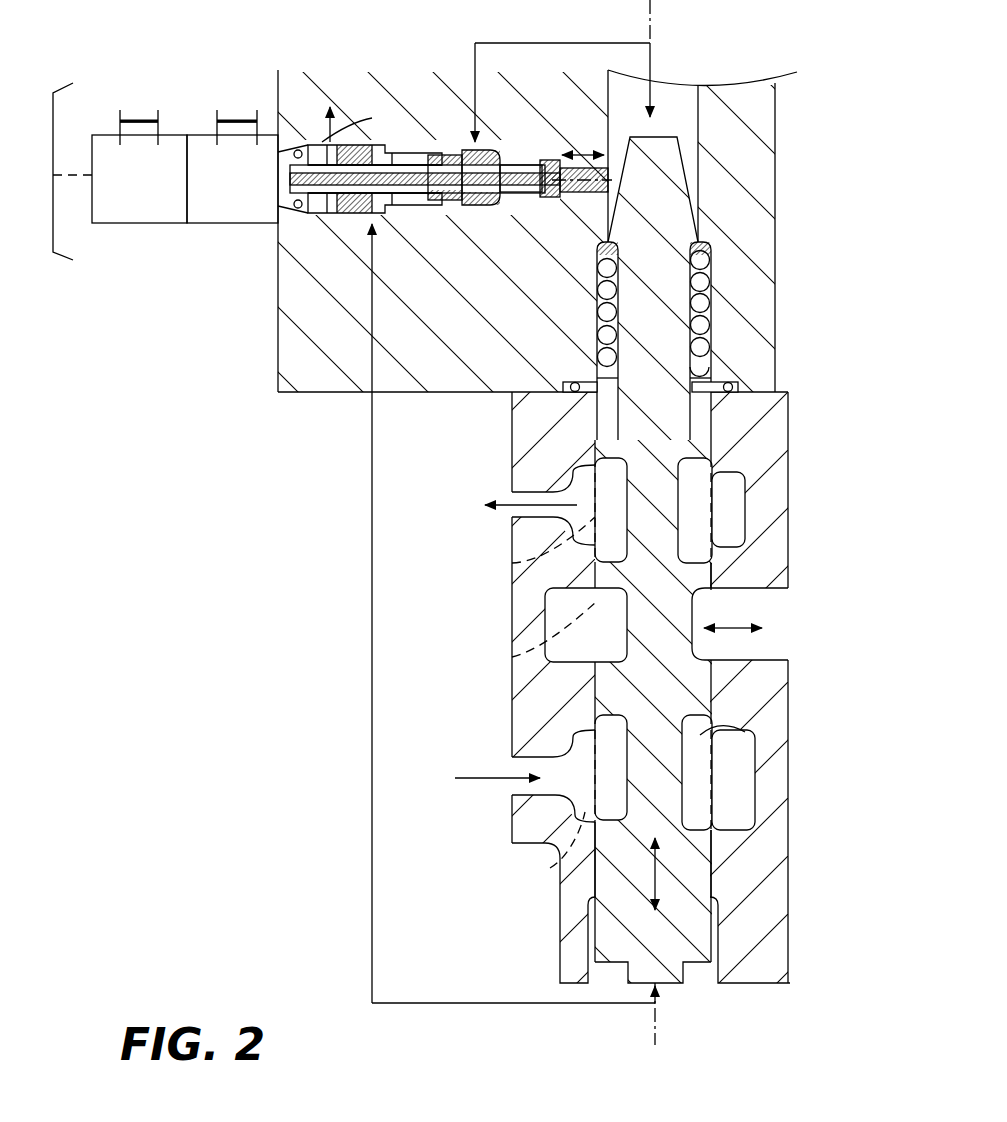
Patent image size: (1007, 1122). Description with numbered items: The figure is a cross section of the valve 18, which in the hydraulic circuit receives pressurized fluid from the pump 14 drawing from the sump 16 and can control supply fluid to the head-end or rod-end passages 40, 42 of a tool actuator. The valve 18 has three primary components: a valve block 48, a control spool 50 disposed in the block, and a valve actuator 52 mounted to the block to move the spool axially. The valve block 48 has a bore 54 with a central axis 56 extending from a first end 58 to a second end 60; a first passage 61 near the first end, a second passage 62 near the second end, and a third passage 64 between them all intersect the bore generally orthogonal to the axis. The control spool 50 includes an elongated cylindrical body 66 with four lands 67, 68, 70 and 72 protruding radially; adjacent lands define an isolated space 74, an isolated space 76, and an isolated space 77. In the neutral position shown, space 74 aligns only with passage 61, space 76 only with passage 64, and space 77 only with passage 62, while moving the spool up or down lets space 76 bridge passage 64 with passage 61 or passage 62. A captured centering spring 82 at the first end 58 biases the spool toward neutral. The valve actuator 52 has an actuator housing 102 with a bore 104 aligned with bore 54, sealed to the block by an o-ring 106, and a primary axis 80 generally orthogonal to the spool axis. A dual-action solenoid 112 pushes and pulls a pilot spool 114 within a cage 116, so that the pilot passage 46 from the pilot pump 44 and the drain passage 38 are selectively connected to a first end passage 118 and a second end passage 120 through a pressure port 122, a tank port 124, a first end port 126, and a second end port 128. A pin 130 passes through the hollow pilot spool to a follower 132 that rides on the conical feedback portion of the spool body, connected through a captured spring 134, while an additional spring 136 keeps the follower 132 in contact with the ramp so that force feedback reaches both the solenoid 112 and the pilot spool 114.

The pump 14 is at (479, 771).
The sump 16 is at (439, 310).
The valve 18 is at (208, 700).
The drain passage 38 is at (333, 140).
The head-end passage 40 is at (817, 618).
The rod-end passage 42 is at (804, 643).
The pilot pump 44 is at (451, 92).
The pilot passage 46 is at (420, 142).
The valve block 48 is at (768, 439).
The control spool 50 is at (667, 562).
The valve actuator 52 is at (53, 178).
The bore 54 is at (700, 727).
The central axis 56 is at (655, 1020).
The first end 58 is at (777, 230).
The second end 60 is at (792, 973).
The first passage 61 is at (593, 497).
The second passage 62 is at (590, 787).
The third passage 64 is at (750, 624).
The body 66 is at (684, 975).
The land 67 is at (702, 455).
The land 68 is at (688, 580).
The land 70 is at (680, 692).
The land 72 is at (690, 893).
The isolated space 74 is at (512, 563).
The isolated space 76 is at (512, 657).
The isolated space 77 is at (550, 868).
The primary axis 80 is at (58, 180).
The centering spring 82 is at (703, 318).
The actuator housing 102 is at (471, 319).
The bore 104 is at (695, 117).
The o-ring 106 is at (577, 395).
The dual-action solenoid 112 is at (135, 189).
The pilot spool 114 is at (297, 140).
The cage 116 is at (290, 215).
The first end passage 118 is at (555, 44).
The second end passage 120 is at (508, 1004).
The pressure port 122 is at (428, 158).
The tank port 124 is at (375, 129).
The first end port 126 is at (477, 155).
The second end port 128 is at (378, 215).
The pin 130 is at (283, 178).
The follower 132 is at (567, 192).
The captured spring 134 is at (510, 192).
The additional spring 136 is at (470, 197).